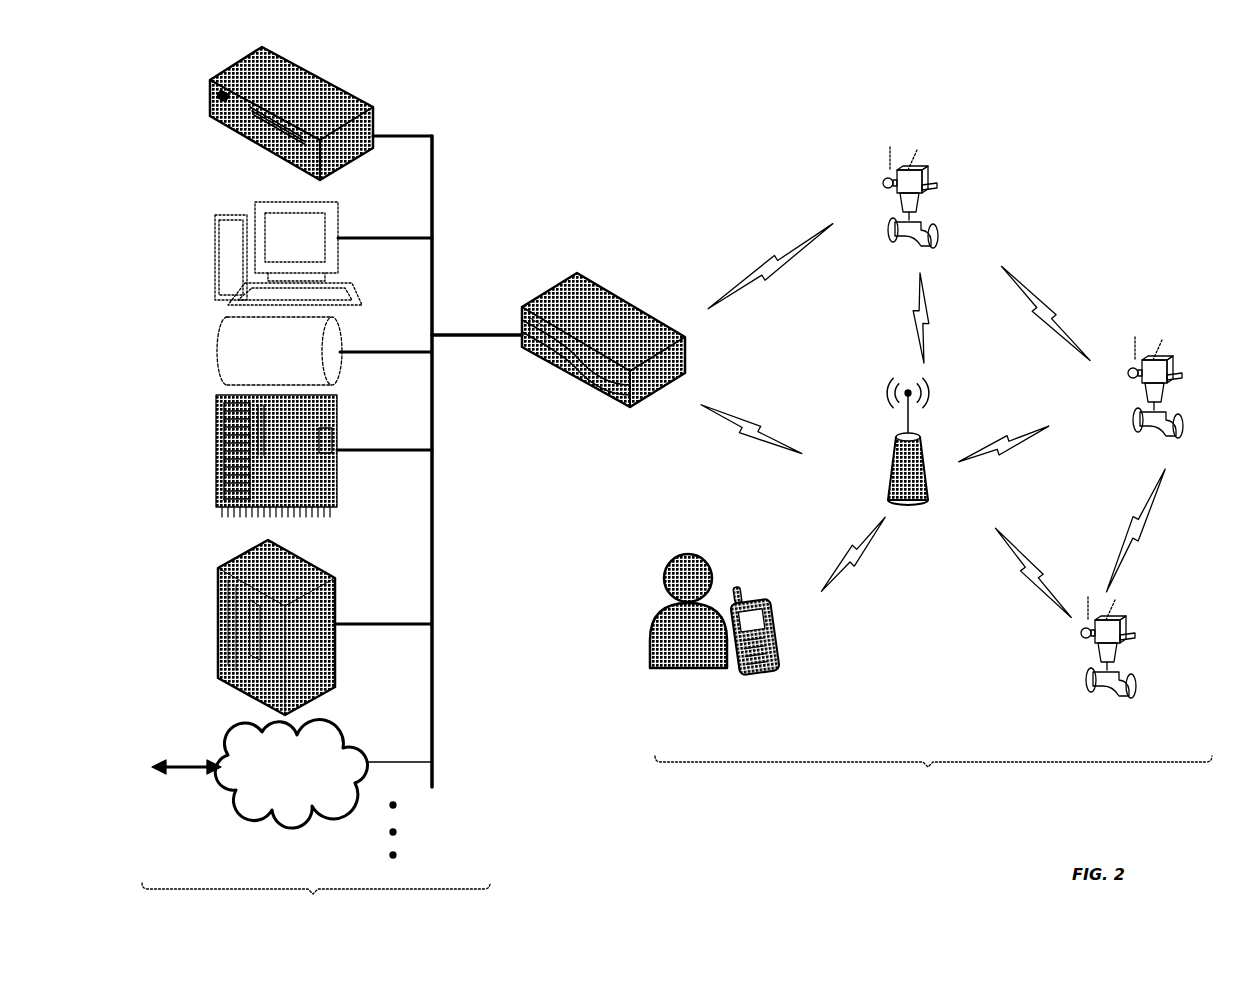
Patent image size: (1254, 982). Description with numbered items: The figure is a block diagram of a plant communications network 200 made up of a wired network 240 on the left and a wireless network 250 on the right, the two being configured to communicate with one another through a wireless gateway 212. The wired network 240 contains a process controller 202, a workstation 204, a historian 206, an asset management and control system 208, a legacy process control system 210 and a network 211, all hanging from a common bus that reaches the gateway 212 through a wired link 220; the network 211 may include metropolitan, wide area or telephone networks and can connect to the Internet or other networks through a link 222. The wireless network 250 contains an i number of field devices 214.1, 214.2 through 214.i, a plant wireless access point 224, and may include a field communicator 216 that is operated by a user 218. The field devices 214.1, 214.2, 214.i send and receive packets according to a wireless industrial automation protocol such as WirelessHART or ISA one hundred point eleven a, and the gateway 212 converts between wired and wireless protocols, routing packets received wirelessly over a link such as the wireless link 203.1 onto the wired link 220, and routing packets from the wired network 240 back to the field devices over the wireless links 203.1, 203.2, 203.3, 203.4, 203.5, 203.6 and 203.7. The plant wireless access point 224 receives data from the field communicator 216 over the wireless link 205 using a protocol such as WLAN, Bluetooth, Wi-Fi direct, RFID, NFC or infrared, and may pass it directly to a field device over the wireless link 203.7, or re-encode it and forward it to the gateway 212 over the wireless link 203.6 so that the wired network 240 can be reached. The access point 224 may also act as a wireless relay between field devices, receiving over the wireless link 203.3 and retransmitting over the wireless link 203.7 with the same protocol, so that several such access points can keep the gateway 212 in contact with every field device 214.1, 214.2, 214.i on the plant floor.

The plant communications network 200 is at (1066, 92).
The process controller 202 is at (317, 73).
The workstation 204 is at (342, 218).
The historian 206 is at (343, 334).
The asset management and control system 208 is at (339, 410).
The legacy process control system 210 is at (337, 596).
The network 211 is at (343, 728).
The wireless gateway 212 is at (598, 290).
The field device 214.1 is at (925, 178).
The field device 214.2 is at (1138, 418).
The field device 214.i is at (1085, 683).
The field communicator 216 is at (781, 637).
The user 218 is at (645, 625).
The wired link 220 is at (438, 147).
The link 222 is at (187, 772).
The plant wireless access point 224 is at (895, 447).
The wireless link 203.1 is at (778, 281).
The wireless link 203.2 is at (1030, 285).
The wireless link 203.3 is at (912, 317).
The wireless link 203.4 is at (1017, 545).
The wireless link 203.5 is at (1145, 535).
The wireless link 203.6 is at (750, 420).
The wireless link 203.7 is at (1005, 462).
The wireless link 205 is at (843, 553).
The wired network 240 is at (316, 900).
The wireless network 250 is at (933, 777).